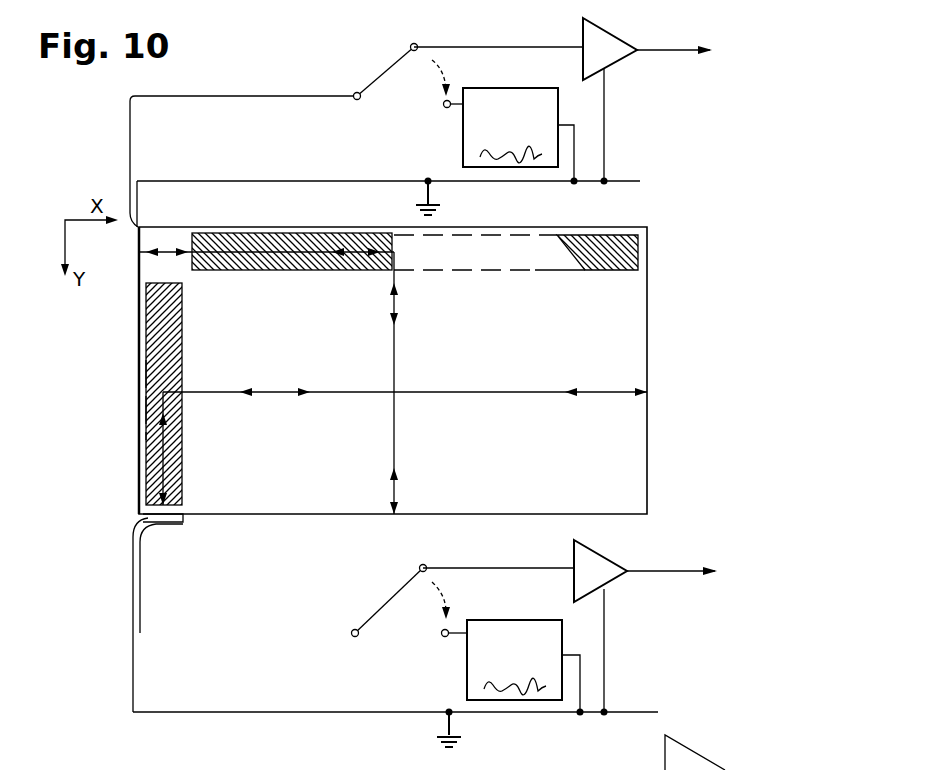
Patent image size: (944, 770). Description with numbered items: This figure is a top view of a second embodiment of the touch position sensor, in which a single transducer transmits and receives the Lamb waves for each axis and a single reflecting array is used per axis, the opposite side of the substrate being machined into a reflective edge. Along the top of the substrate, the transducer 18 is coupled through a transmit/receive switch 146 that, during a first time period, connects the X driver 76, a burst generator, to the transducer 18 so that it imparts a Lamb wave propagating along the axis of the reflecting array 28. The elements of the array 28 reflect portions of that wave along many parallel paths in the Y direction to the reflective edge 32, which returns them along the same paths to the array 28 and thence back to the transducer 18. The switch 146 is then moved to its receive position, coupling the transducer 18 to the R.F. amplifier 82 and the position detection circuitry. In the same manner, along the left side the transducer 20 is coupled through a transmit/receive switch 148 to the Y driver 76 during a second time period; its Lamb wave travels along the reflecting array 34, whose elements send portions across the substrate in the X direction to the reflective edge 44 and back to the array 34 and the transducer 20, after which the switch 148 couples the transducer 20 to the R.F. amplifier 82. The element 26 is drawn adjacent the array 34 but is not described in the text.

The transducer 18 is at (138, 265).
The transducer 20 is at (165, 527).
The transducer element 26 is at (142, 410).
The reflecting array 28 is at (372, 270).
The reflective edge 32 is at (590, 514).
The reflecting array 34 is at (147, 356).
The reflective edge 44 is at (647, 372).
The driver 76 is at (463, 141).
The R.F. amplifier 82 is at (605, 32).
The transmit/receive switch 146 is at (378, 76).
The transmit/receive switch 148 is at (392, 600).